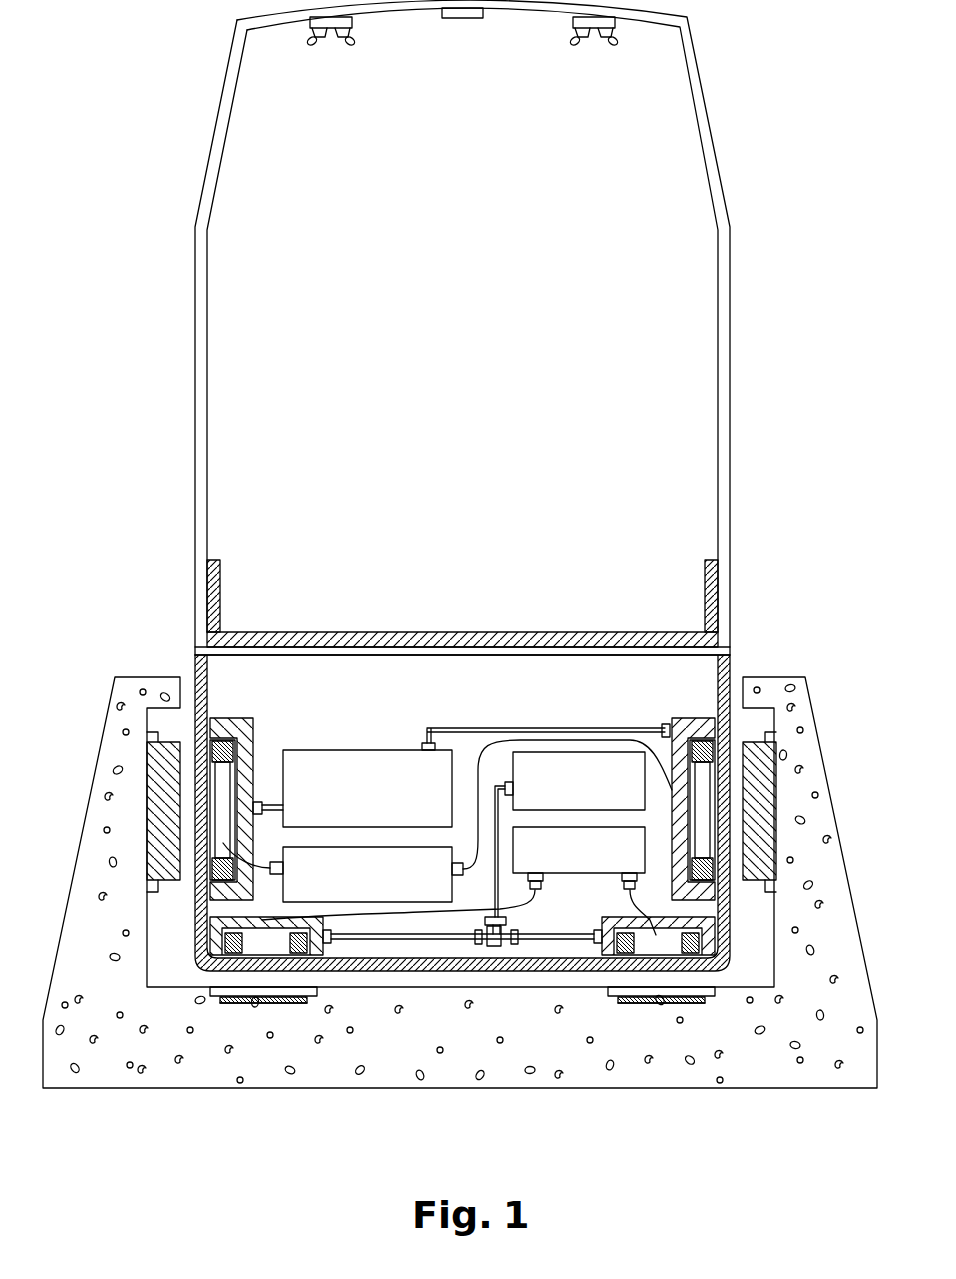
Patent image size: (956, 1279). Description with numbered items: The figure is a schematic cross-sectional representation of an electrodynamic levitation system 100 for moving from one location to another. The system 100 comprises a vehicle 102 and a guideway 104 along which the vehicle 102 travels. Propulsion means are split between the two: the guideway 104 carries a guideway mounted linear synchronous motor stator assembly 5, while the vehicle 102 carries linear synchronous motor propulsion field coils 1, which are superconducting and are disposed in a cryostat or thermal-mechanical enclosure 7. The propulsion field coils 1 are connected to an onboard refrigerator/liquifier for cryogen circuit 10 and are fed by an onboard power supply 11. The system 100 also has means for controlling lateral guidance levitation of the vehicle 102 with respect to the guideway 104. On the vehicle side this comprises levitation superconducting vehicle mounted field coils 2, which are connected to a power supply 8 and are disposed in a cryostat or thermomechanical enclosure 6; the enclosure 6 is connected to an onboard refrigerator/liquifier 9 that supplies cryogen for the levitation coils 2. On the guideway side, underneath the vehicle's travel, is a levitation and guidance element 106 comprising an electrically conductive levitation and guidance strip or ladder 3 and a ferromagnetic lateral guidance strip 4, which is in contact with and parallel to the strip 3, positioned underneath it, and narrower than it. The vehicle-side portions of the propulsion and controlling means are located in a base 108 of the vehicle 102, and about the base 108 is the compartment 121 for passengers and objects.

The electrodynamic levitation system 100 is at (127, 402).
The vehicle 102 is at (187, 600).
The guideway 104 is at (106, 694).
The levitation and guidance element 106 is at (317, 1010).
The base 108 is at (428, 700).
The compartment 121 is at (275, 632).
The linear synchronous motor propulsion field coil 1 is at (226, 738).
The levitation superconducting vehicle mounted field coil 2 is at (290, 948).
The electrically conductive levitation and guidance strip or ladder 3 is at (212, 992).
The ferromagnetic lateral guidance strip 4 is at (263, 1003).
The guideway mounted linear synchronous motor stator assembly 5 is at (160, 777).
The cryostat or thermomechanical enclosure 6 is at (325, 940).
The cryostat or thermal-mechanical enclosure 7 is at (250, 780).
The power supply 8 is at (585, 865).
The onboard refrigerator/liquifier 9 is at (585, 795).
The onboard refrigerator/liquifier for cryogen circuit 10 is at (380, 805).
The onboard power supply 11 is at (380, 887).